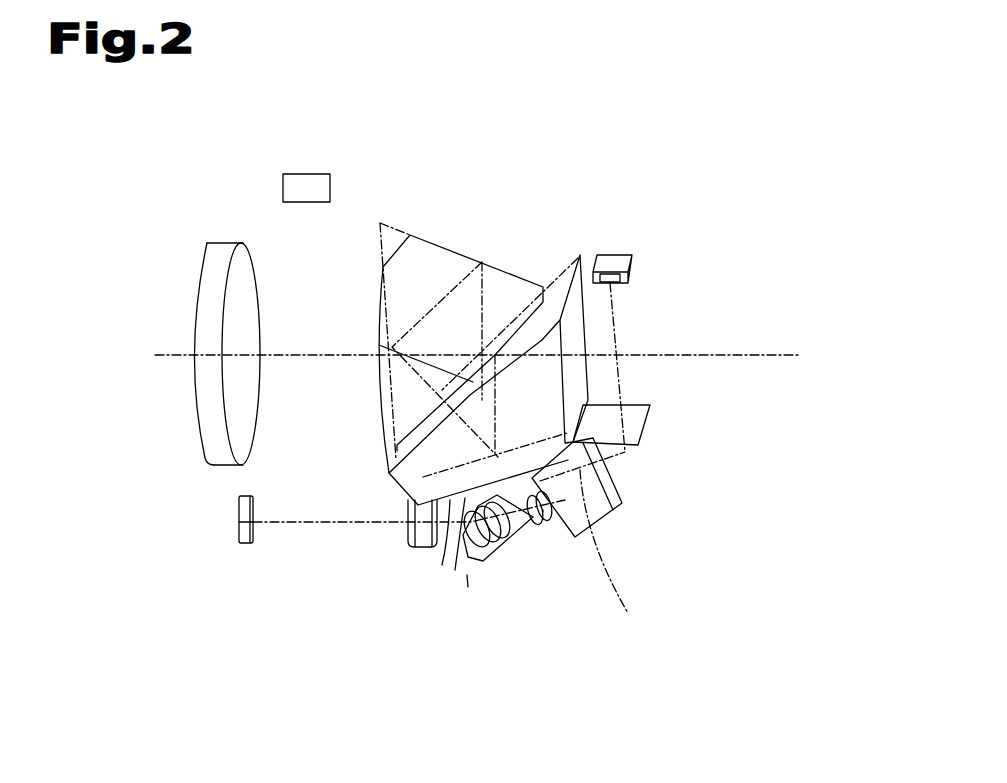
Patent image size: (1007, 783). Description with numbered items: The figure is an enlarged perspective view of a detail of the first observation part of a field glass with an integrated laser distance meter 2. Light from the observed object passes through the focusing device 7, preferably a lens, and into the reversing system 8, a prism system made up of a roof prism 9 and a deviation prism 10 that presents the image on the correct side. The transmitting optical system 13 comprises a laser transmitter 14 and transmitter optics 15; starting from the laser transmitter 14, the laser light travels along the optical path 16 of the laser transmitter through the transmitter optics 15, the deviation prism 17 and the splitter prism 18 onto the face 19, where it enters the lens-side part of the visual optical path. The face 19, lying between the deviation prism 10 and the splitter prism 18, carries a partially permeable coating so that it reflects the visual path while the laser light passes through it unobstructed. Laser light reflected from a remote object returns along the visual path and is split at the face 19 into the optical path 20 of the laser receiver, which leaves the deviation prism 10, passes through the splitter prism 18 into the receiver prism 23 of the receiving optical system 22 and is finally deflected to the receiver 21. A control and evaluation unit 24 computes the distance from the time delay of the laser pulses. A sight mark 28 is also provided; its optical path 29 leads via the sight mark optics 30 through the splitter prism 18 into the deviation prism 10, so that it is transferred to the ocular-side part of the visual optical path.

The laser distance meter 2 is at (547, 603).
The focusing device 7 is at (215, 431).
The reversing system 8 is at (490, 209).
The roof prism 9 is at (441, 272).
The deviation prism 10 is at (410, 487).
The transmitting optical system 13 is at (514, 608).
The laser transmitter 14 is at (490, 578).
The transmitter optics 15 is at (543, 510).
The optical path of the laser transmitter 16 is at (619, 560).
The deviation prism 17 is at (612, 537).
The splitter prism 18 is at (455, 570).
The face 19 is at (442, 565).
The optical path of the laser receiver 20 is at (620, 330).
The receiver 21 is at (630, 236).
The receiving optical system 22 is at (724, 448).
The receiver prism 23 is at (640, 452).
The control and evaluation unit 24 is at (301, 182).
The sight mark 28 is at (243, 545).
The optical path of the sight mark 29 is at (291, 530).
The sight mark optics 30 is at (468, 587).